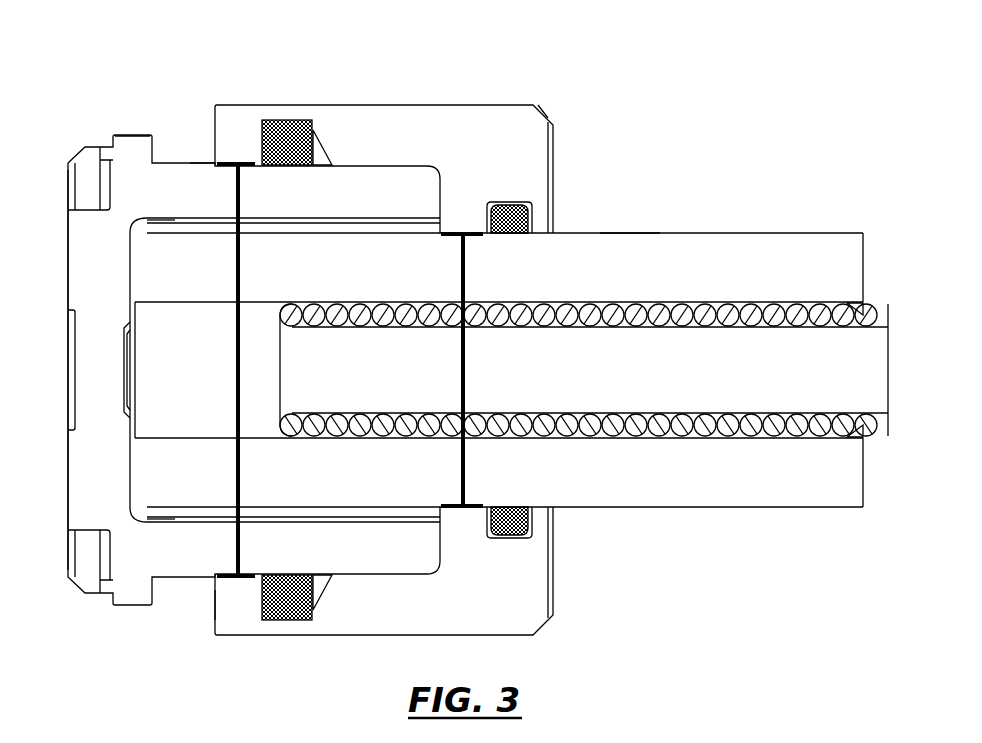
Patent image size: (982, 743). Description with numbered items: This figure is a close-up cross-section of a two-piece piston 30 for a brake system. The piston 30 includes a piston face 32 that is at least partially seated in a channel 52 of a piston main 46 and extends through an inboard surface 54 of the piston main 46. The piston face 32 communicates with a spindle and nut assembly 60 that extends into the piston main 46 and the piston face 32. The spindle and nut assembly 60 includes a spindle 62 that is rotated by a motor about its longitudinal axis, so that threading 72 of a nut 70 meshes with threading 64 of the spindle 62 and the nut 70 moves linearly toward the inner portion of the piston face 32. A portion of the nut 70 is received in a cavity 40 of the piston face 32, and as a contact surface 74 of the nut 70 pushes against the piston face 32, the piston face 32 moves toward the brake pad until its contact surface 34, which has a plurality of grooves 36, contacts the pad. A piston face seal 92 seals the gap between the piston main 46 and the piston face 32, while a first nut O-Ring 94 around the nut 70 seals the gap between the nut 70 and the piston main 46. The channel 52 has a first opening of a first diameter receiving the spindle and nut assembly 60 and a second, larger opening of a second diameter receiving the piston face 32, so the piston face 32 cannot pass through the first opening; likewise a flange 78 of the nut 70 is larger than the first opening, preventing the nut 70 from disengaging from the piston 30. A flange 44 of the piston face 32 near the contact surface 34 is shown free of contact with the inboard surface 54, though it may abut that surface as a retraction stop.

The piston 30 is at (105, 73).
The piston face 32 is at (173, 560).
The contact surface 34 is at (68, 272).
The grooves 36 is at (107, 203).
The cavity 40 is at (147, 522).
The flange 44 is at (143, 148).
The piston main 46 is at (363, 138).
The channel 52 is at (203, 160).
The inboard surface 54 is at (213, 603).
The spindle and nut assembly 60 is at (635, 218).
The spindle 62 is at (840, 373).
The threading 64 is at (870, 312).
The nut 70 is at (583, 258).
The threading 72 is at (787, 310).
The contact surface 74 is at (128, 473).
The flange 78 is at (173, 220).
The piston face seal 92 is at (287, 147).
The first nut O-Ring 94 is at (513, 210).